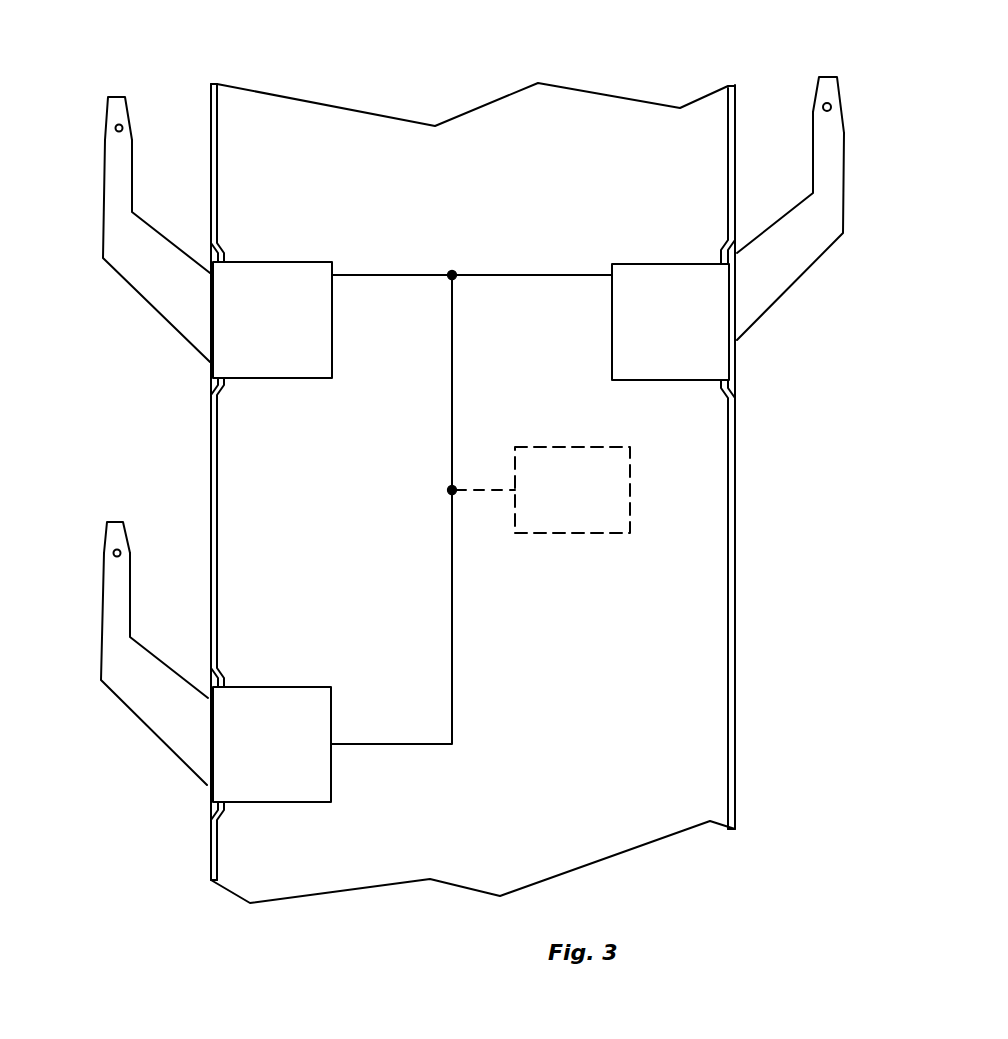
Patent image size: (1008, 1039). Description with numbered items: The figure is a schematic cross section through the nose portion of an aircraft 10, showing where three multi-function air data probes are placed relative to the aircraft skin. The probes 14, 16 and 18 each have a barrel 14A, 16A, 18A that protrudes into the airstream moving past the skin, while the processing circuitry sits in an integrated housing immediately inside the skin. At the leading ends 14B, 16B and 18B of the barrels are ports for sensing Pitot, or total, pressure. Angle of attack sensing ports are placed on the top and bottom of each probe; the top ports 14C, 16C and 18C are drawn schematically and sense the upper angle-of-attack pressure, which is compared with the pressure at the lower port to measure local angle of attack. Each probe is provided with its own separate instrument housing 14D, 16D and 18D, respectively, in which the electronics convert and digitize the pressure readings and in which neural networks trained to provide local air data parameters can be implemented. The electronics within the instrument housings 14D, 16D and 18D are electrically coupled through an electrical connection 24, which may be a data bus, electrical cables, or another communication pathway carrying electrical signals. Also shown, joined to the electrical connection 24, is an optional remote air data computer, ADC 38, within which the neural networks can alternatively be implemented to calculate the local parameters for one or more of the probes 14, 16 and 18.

The strip / substrate 10 is at (740, 546).
The probe 14 is at (197, 201).
The barrel 14A is at (132, 198).
The leading end 14B is at (112, 97).
The top angle of attack sensing port 14C is at (122, 126).
The instrument housing 14D is at (263, 272).
The probe 16 is at (737, 193).
The barrel 16A is at (813, 170).
The leading end 16B is at (829, 77).
The top angle of attack sensing port 16C is at (822, 104).
The instrument housing 16D is at (699, 283).
The probe 18 is at (220, 625).
The barrel 18A is at (132, 620).
The leading end 18B is at (110, 521).
The top angle of attack sensing port 18C is at (121, 552).
The instrument housing 18D is at (250, 702).
The electrical connection 24 is at (452, 676).
The air data computer 38 is at (570, 440).